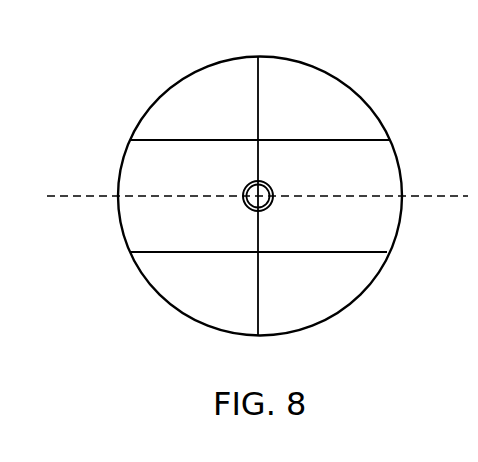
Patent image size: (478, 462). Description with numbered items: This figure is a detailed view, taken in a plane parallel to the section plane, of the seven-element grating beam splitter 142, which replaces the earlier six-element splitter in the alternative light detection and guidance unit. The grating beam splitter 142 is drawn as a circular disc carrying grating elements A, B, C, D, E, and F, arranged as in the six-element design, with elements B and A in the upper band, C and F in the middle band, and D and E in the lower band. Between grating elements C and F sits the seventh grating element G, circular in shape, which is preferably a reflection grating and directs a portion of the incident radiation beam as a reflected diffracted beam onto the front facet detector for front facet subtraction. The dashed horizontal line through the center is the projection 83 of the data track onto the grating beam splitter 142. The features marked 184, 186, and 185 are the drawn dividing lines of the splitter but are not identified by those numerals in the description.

The grating beam splitter 142 is at (112, 67).
The vertical dividing line 184 is at (256, 57).
The upper horizontal dividing line 186 is at (373, 140).
The lower horizontal dividing line 185 is at (372, 252).
The projection of the data track 83 is at (92, 195).